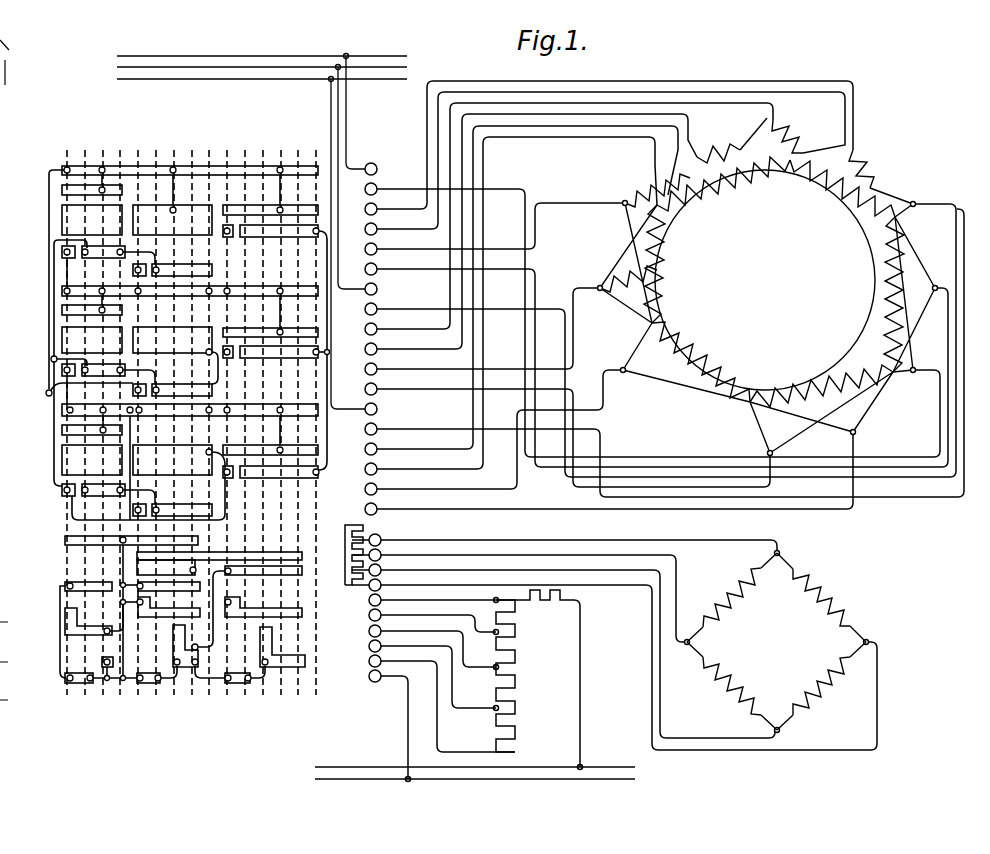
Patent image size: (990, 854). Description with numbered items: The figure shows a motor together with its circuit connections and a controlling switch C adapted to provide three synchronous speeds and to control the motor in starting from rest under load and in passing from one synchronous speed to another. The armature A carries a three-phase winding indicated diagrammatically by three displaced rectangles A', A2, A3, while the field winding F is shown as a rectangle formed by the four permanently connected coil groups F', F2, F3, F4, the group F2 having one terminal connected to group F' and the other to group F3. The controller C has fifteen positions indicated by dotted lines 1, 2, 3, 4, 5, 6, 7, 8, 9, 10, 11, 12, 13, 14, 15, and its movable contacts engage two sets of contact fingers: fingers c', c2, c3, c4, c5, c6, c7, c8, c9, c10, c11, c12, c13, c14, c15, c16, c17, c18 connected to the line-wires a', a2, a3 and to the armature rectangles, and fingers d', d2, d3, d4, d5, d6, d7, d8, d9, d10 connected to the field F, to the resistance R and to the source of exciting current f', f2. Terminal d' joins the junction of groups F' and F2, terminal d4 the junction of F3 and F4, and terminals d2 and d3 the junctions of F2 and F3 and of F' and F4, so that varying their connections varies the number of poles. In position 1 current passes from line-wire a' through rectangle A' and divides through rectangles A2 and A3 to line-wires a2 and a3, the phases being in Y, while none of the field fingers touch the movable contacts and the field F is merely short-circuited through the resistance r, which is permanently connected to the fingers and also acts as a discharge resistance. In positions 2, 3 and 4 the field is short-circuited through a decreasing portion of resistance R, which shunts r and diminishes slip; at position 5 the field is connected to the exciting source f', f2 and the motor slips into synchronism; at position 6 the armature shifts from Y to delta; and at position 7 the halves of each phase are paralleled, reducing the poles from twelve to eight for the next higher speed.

The line-wire a' is at (262, 104).
The line-wire a2 is at (262, 171).
The line-wire a3 is at (262, 238).
The controlling switch C is at (188, 414).
The first controller position 1 is at (316, 431).
The second controller position 2 is at (298, 431).
The third controller position 3 is at (281, 431).
The fourth controller position 4 is at (263, 431).
The fifth controller position 5 is at (245, 431).
The sixth controller position 6 is at (227, 431).
The seventh controller position 7 is at (209, 431).
The eighth controller position 8 is at (192, 431).
The ninth controller position 9 is at (174, 431).
The tenth controller position 10 is at (156, 431).
The eleventh controller position 11 is at (137, 431).
The twelfth controller position 12 is at (119, 431).
The thirteenth controller position 13 is at (102, 431).
The fourteenth controller position 14 is at (84, 431).
The fifteenth controller position 15 is at (66, 431).
The controller contact finger c' is at (379, 165).
The controller contact finger c2 is at (652, 316).
The controller contact finger c3 is at (609, 148).
The controller contact finger c4 is at (605, 163).
The controller contact finger c5 is at (495, 229).
The controller contact finger c6 is at (656, 361).
The controller contact finger c7 is at (380, 285).
The controller contact finger c8 is at (660, 340).
The controller contact finger c9 is at (569, 219).
The controller contact finger c10 is at (531, 234).
The controller contact finger c11 is at (482, 331).
The controller contact finger c12 is at (567, 431).
The controller contact finger c13 is at (383, 405).
The controller contact finger c14 is at (664, 353).
The controller contact finger c15 is at (521, 290).
The controller contact finger c16 is at (511, 306).
The controller contact finger c17 is at (494, 432).
The controller contact finger c18 is at (609, 473).
The armature A is at (768, 287).
The armature phase winding A' is at (869, 169).
The armature phase winding A2 is at (795, 134).
The armature phase winding A3 is at (718, 142).
The resistance r is at (359, 553).
The controller finger d' is at (564, 538).
The controller finger d2 is at (519, 591).
The controller finger d3 is at (563, 647).
The controller finger d4 is at (614, 660).
The controller finger d5 is at (476, 678).
The controller finger d6 is at (434, 618).
The controller finger d7 is at (434, 643).
The controller finger d8 is at (434, 671).
The controller finger d9 is at (442, 699).
The controller finger d10 is at (390, 722).
The resistance R is at (518, 676).
The field winding F is at (777, 642).
The field coil group F' is at (821, 597).
The field coil group F2 is at (732, 597).
The field coil group F3 is at (732, 686).
The field coil group F4 is at (821, 686).
The exciting current source terminal f' is at (475, 757).
The exciting current source terminal f2 is at (475, 789).